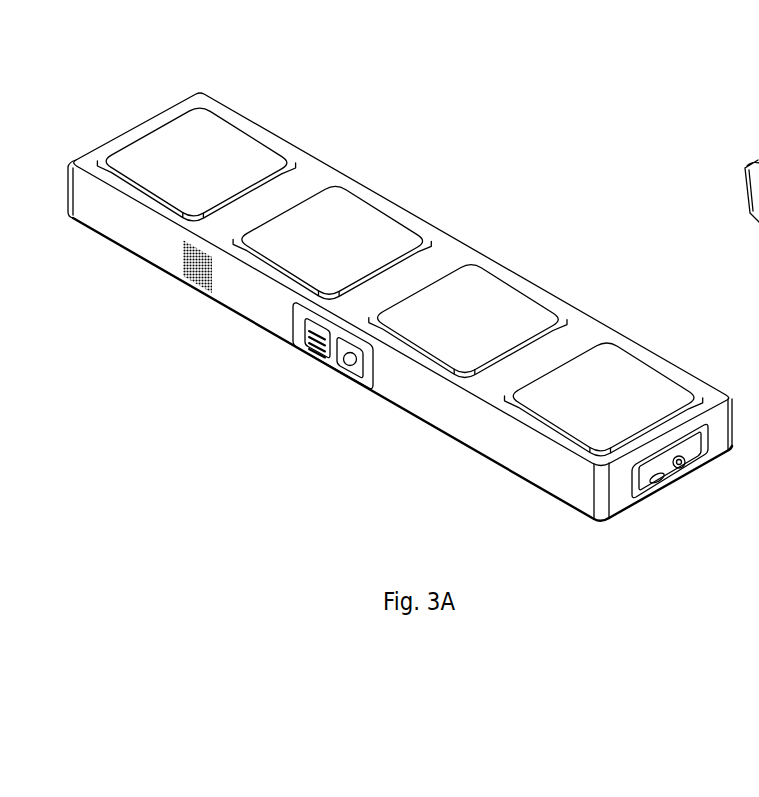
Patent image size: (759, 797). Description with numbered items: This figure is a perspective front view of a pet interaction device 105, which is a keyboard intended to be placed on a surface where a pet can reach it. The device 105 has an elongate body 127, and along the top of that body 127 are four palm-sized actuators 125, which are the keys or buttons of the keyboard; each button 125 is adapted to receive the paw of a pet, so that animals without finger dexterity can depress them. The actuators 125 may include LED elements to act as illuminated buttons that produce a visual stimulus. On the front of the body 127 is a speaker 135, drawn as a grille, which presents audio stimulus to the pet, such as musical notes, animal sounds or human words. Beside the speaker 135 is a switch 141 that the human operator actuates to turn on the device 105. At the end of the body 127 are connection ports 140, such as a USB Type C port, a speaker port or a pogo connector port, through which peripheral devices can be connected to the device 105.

The pet interaction device 105 is at (490, 200).
The actuators 125 is at (222, 152).
The elongate body 127 is at (557, 465).
The speaker 135 is at (203, 275).
The switch 141 is at (310, 352).
The connection ports 140 is at (683, 482).